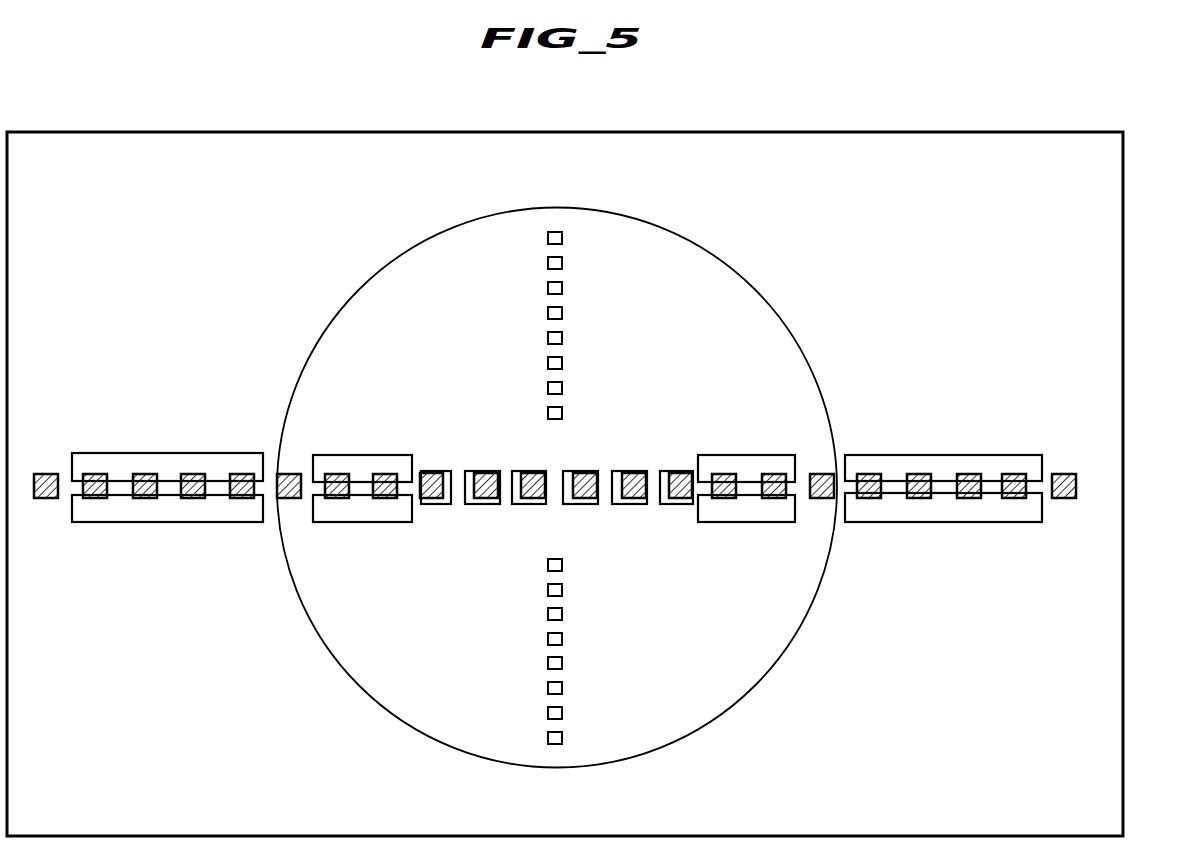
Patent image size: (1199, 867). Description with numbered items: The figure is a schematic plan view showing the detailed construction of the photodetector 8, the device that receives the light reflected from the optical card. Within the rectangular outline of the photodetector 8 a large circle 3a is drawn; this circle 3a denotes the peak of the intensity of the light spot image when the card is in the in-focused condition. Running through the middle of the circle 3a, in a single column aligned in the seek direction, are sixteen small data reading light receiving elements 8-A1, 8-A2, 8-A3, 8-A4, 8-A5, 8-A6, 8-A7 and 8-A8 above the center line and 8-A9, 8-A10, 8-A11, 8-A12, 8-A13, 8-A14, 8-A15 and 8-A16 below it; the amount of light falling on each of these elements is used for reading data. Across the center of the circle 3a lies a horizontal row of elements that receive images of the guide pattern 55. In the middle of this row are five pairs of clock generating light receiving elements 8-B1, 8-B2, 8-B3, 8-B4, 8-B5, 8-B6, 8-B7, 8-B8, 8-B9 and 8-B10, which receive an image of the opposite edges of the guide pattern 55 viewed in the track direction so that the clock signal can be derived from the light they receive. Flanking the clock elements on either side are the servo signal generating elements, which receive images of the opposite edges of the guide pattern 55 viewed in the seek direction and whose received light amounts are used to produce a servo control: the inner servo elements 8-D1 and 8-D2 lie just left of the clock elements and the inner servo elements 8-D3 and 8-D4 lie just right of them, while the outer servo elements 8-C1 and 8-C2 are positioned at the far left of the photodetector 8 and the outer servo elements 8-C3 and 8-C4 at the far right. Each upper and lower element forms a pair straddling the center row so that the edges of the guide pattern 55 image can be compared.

The photodetector 8 is at (877, 132).
The circle 3a is at (728, 265).
The guide pattern 55 is at (1078, 486).
The light receiving element 8-A1 is at (563, 239).
The light receiving element 8-A2 is at (548, 263).
The light receiving element 8-A3 is at (563, 289).
The light receiving element 8-A4 is at (548, 313).
The light receiving element 8-A5 is at (563, 339).
The light receiving element 8-A6 is at (548, 363).
The light receiving element 8-A7 is at (563, 389).
The light receiving element 8-A8 is at (548, 413).
The light receiving element 8-A9 is at (563, 565).
The light receiving element 8-A10 is at (548, 590).
The light receiving element 8-A11 is at (563, 614).
The light receiving element 8-A12 is at (548, 639).
The light receiving element 8-A13 is at (563, 663).
The light receiving element 8-A14 is at (548, 688).
The light receiving element 8-A15 is at (563, 712).
The light receiving element 8-A16 is at (548, 738).
The light receiving element 8-B1 is at (447, 471).
The light receiving element 8-B2 is at (428, 504).
The light receiving element 8-B3 is at (483, 471).
The light receiving element 8-B4 is at (468, 504).
The light receiving element 8-B5 is at (528, 471).
The light receiving element 8-B6 is at (514, 504).
The light receiving element 8-B7 is at (590, 471).
The light receiving element 8-B8 is at (566, 504).
The light receiving element 8-B9 is at (636, 471).
The light receiving element 8-B10 is at (614, 504).
The light receiving element 8-C1 is at (138, 453).
The light receiving element 8-C2 is at (145, 522).
The light receiving element 8-C3 is at (958, 455).
The light receiving element 8-C4 is at (961, 522).
The light receiving element 8-D1 is at (342, 455).
The light receiving element 8-D2 is at (338, 522).
The light receiving element 8-D3 is at (746, 455).
The light receiving element 8-D4 is at (760, 522).